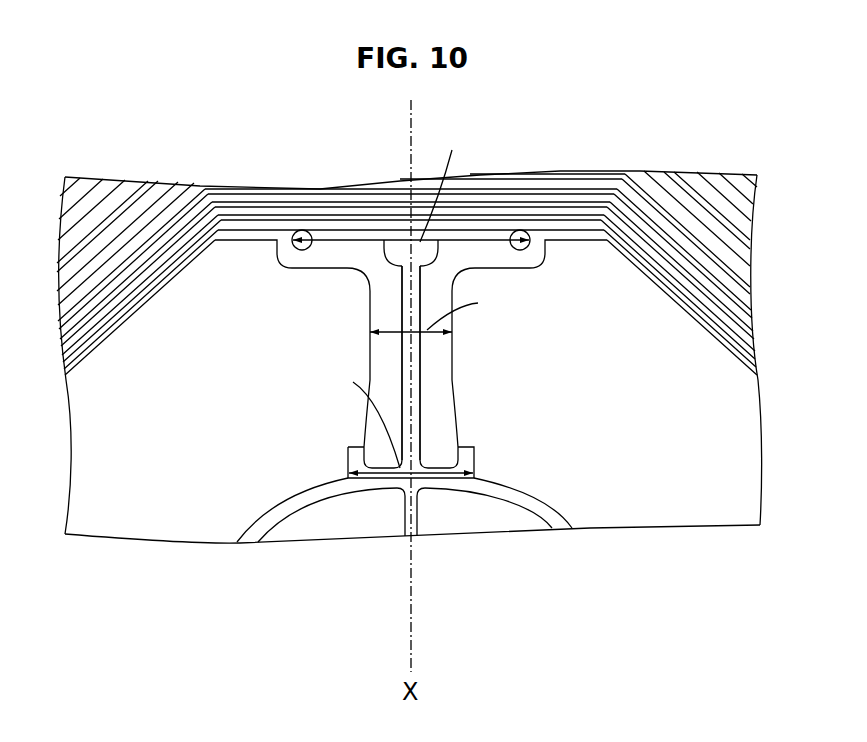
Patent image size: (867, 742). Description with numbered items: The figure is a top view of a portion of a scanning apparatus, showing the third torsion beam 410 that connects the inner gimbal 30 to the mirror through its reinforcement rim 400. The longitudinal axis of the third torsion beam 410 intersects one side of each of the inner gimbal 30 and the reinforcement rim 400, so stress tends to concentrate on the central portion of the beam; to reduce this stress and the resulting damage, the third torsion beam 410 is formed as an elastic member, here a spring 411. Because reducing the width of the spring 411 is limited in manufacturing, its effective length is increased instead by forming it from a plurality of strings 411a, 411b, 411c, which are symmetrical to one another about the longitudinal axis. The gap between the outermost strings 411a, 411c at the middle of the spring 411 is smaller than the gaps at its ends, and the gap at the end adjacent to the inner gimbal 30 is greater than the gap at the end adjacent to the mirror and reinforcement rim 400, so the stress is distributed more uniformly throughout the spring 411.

The inner gimbal 30 is at (146, 311).
The reinforcement rim 400 is at (282, 495).
The third torsion beam 410 is at (417, 380).
The spring 411 is at (619, 598).
The string 411a is at (365, 420).
The string 411b is at (419, 418).
The string 411c is at (455, 412).